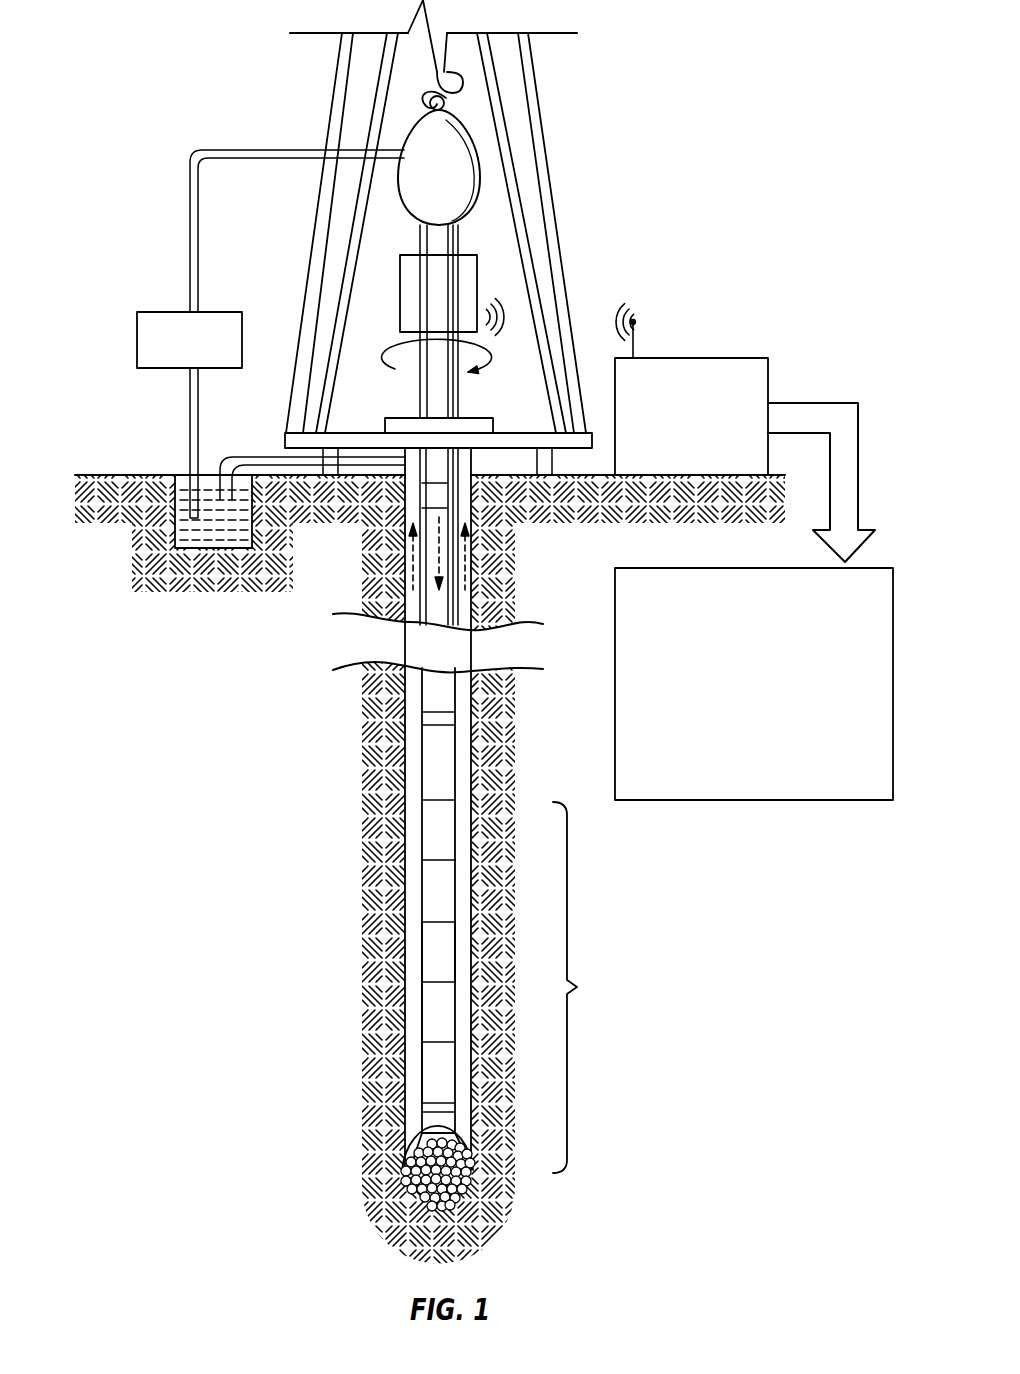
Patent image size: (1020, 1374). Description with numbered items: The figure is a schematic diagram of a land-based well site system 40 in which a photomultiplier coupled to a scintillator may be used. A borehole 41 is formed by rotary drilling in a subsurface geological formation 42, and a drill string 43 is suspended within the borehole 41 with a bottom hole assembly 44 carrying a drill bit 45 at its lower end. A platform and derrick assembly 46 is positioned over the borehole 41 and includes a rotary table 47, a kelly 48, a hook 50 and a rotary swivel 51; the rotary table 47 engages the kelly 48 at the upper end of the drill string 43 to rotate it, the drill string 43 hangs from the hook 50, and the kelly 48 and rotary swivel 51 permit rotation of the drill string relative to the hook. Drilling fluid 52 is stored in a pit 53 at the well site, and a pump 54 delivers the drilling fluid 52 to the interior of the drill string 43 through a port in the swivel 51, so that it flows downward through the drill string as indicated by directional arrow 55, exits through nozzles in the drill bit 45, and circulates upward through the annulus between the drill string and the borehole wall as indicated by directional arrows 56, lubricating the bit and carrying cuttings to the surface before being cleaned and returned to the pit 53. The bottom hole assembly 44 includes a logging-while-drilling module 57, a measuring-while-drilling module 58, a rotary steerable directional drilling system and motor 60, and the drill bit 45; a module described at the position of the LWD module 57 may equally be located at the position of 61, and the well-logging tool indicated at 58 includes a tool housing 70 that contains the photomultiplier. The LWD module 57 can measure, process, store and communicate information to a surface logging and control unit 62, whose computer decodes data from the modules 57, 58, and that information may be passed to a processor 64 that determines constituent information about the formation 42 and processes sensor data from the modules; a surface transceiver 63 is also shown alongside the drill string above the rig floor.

The well site system 40 is at (727, 83).
The borehole 41 is at (493, 422).
The geological formation 42 is at (581, 721).
The drill string 43 is at (437, 470).
The bottom hole assembly 44 is at (583, 987).
The drill bit 45 is at (410, 1137).
The platform and derrick assembly 46 is at (565, 122).
The rotary table 47 is at (463, 468).
The kelly 48 is at (437, 393).
The hook 50 is at (447, 57).
The rotary swivel 51 is at (433, 188).
The drilling fluid 52 is at (210, 548).
The pit 53 is at (180, 473).
The pump 54 is at (160, 370).
The directional arrow 55 is at (440, 563).
The directional arrows 56 is at (410, 573).
The logging-while-drilling module 57 is at (430, 883).
The measuring-while-drilling module 58 is at (420, 952).
The rotary steerable directional drilling system and motor 60 is at (432, 1073).
The module position 61 is at (432, 1015).
The logging and control unit 62 is at (712, 358).
The surface transceiver 63 is at (477, 272).
The processor 64 is at (712, 568).
The tool housing 70 is at (442, 952).